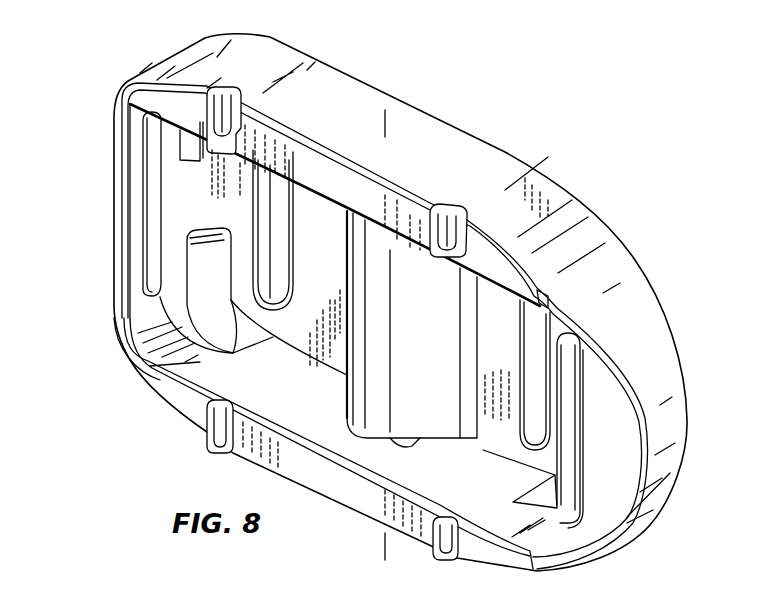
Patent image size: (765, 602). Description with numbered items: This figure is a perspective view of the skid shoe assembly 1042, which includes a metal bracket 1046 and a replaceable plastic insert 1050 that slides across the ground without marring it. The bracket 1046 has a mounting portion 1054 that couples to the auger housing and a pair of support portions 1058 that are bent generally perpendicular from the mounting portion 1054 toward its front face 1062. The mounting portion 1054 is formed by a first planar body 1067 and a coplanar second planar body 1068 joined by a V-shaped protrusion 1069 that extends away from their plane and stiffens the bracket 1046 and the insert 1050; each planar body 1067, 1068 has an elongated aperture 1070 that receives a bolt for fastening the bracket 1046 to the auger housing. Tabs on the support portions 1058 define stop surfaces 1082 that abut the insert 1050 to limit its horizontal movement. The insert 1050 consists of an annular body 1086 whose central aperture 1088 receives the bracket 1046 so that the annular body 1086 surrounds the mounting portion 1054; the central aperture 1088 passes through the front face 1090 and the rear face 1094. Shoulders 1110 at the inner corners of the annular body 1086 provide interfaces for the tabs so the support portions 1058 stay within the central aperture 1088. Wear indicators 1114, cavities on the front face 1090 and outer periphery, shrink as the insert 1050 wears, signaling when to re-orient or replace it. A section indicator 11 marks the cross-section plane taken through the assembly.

The section line 11 is at (384, 120).
The skid shoe assembly 1042 is at (84, 134).
The bracket 1046 is at (284, 335).
The replaceable insert 1050 is at (622, 247).
The mounting portion 1054 is at (331, 235).
The support portions 1058 is at (157, 213).
The front face 1062 is at (499, 379).
The first planar body 1067 is at (525, 450).
The second planar body 1068 is at (318, 207).
The V-shaped protrusion 1069 is at (401, 447).
The elongated aperture 1070 is at (284, 222).
The stop surfaces 1082 is at (187, 260).
The annular body 1086 is at (625, 297).
The central aperture 1088 is at (160, 380).
The front face 1090 is at (328, 336).
The rear face 1094 is at (445, 123).
The shoulders 1110 is at (202, 363).
The wear indicators 1114 is at (228, 100).